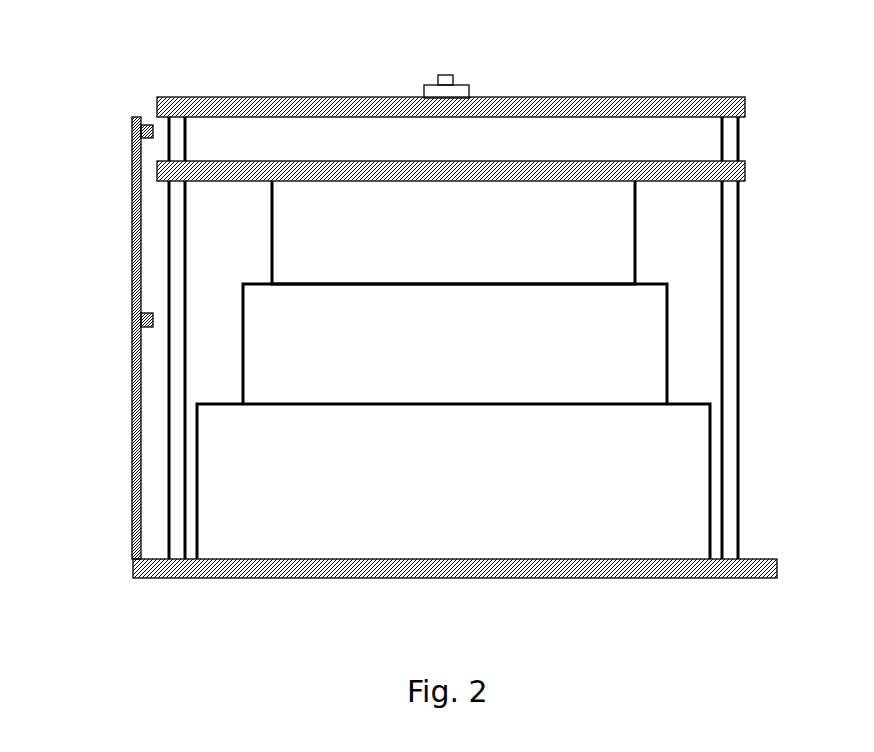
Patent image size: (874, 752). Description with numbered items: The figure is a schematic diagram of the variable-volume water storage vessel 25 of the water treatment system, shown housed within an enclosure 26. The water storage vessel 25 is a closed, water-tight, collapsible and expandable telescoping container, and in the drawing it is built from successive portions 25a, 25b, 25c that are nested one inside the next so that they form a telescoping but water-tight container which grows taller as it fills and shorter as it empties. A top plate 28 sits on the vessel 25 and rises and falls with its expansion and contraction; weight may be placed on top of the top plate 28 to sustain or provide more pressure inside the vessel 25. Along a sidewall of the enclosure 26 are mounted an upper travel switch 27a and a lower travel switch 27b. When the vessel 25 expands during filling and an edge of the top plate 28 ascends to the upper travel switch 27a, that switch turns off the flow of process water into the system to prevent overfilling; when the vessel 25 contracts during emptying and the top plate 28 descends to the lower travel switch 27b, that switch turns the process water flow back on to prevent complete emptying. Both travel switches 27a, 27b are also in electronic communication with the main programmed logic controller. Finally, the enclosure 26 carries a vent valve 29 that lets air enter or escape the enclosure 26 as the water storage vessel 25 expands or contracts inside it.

The variable-volume water storage vessel 25 is at (521, 370).
The first successive portion of the vessel 25a is at (476, 500).
The second successive portion of the vessel 25b is at (476, 361).
The third successive portion of the vessel 25c is at (476, 246).
The enclosure 26 is at (730, 306).
The upper travel switch 27a is at (146, 127).
The lower travel switch 27b is at (148, 316).
The top plate 28 is at (733, 172).
The vent valve 29 is at (446, 75).